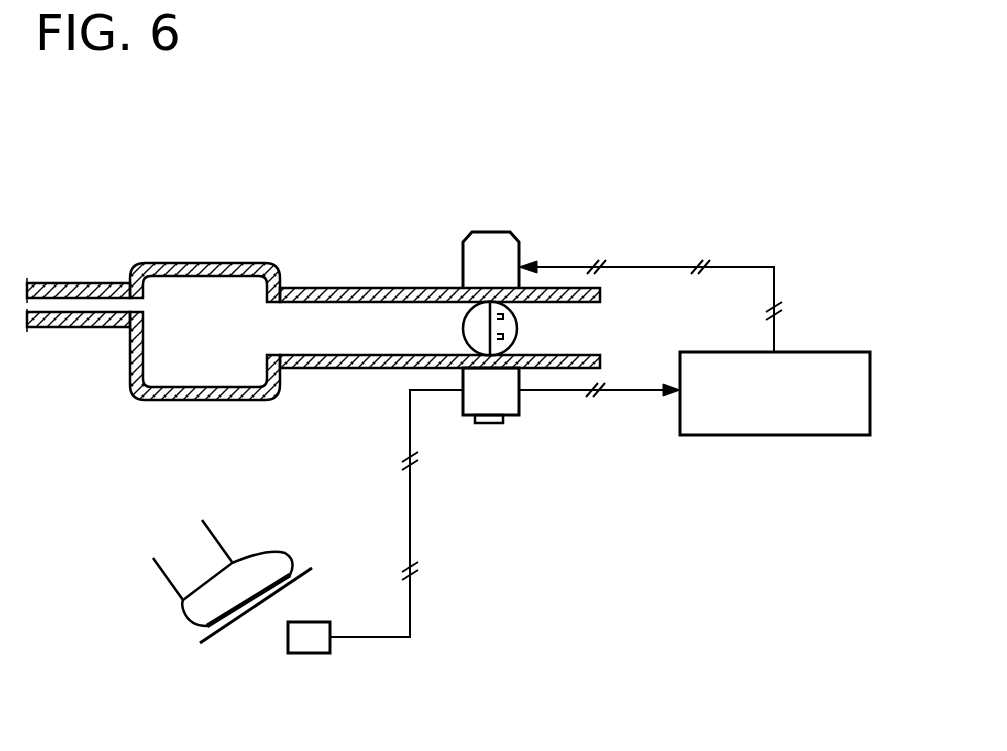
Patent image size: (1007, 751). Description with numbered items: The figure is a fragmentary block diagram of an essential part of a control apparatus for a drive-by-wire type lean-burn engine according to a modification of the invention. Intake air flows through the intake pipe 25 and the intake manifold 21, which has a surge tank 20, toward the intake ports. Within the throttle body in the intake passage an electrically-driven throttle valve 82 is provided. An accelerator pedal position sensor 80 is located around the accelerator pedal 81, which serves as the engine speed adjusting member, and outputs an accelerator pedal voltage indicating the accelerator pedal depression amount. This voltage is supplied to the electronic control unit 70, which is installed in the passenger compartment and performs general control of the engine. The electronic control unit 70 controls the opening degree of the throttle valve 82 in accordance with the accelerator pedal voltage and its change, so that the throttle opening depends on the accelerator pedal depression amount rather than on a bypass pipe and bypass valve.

The surge tank 20 is at (205, 315).
The intake manifold 21 is at (58, 298).
The intake pipe 25 is at (350, 312).
The electronic control unit 70 is at (825, 352).
The accelerator pedal position sensor 80 is at (313, 655).
The accelerator pedal 81 is at (258, 605).
The electrically-driven throttle valve 82 is at (490, 238).